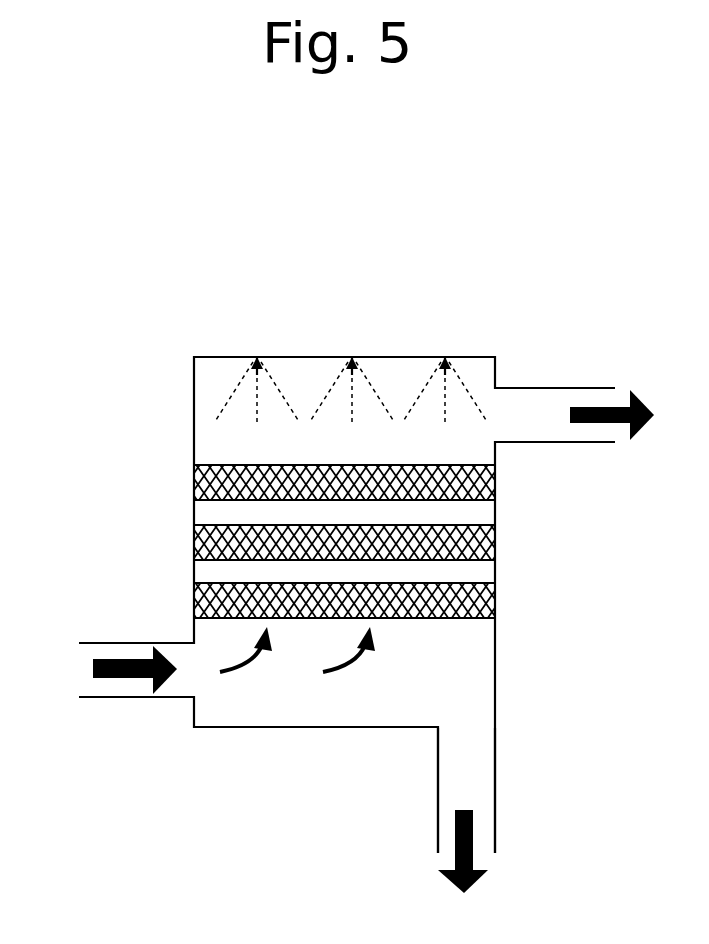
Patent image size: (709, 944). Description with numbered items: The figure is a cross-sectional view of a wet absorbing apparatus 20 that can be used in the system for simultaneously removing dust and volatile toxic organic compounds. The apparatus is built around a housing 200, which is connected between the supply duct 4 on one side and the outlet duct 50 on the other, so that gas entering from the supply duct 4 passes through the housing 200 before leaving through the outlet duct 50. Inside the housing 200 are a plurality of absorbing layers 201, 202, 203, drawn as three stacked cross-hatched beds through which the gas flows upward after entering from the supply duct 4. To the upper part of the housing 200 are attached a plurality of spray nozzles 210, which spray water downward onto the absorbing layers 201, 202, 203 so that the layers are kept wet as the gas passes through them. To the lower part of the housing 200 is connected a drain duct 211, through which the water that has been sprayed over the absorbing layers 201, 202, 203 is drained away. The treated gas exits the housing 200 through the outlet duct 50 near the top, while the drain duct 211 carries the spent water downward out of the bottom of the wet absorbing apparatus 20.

The wet absorbing apparatus 20 is at (168, 403).
The housing 200 is at (228, 345).
The spray nozzles 210 is at (442, 355).
The absorbing layer 201 is at (497, 483).
The absorbing layer 202 is at (497, 543).
The absorbing layer 203 is at (497, 602).
The supply duct 4 is at (103, 650).
The outlet duct 50 is at (582, 438).
The drain duct 211 is at (472, 762).